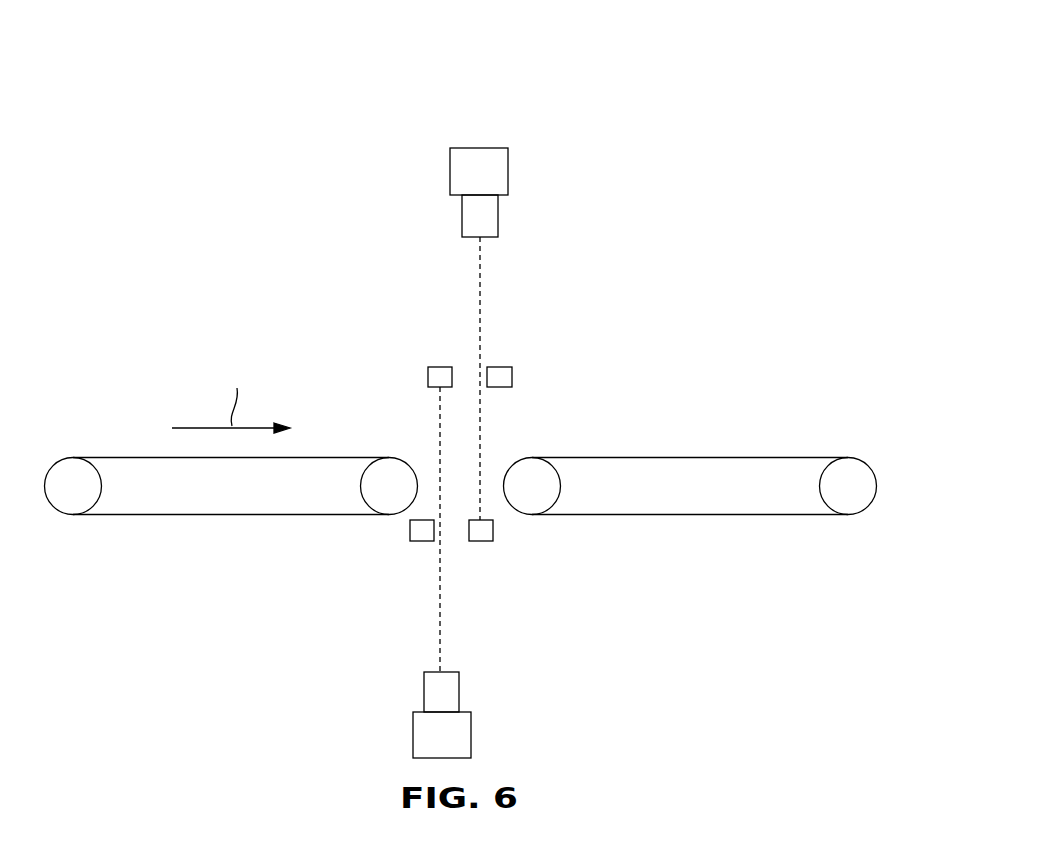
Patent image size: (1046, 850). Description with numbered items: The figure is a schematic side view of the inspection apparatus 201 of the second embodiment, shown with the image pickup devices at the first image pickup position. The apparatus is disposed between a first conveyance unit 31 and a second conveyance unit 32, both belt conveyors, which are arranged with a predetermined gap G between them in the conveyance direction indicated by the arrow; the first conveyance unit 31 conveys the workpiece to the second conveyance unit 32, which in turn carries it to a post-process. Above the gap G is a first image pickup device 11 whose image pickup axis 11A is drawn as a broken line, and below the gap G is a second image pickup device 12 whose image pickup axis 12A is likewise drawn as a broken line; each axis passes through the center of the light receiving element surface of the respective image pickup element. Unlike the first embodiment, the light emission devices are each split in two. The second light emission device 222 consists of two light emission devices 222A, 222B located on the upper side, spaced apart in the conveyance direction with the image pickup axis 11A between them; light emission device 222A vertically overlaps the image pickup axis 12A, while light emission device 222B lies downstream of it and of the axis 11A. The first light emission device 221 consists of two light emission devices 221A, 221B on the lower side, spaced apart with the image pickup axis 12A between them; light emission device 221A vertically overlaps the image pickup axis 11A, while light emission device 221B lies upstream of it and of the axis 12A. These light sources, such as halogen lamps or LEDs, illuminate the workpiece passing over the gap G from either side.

The inspection apparatus 201 is at (568, 99).
The first image pickup device 11 is at (508, 170).
The image pickup axis 11A is at (481, 277).
The second image pickup device 12 is at (471, 733).
The image pickup axis 12A is at (440, 628).
The second light emission device 222 is at (427, 303).
The light emission device 222A is at (440, 367).
The light emission device 222B is at (497, 367).
The first light emission device 221 is at (495, 604).
The light emission device 221A is at (483, 541).
The light emission device 221B is at (425, 541).
The predetermined gap G is at (462, 485).
The first conveyance unit 31 is at (115, 456).
The second conveyance unit 32 is at (775, 456).